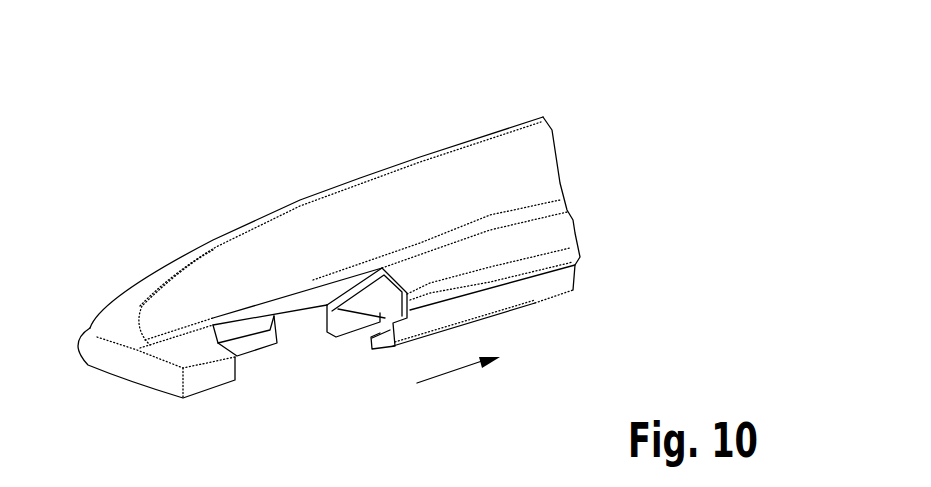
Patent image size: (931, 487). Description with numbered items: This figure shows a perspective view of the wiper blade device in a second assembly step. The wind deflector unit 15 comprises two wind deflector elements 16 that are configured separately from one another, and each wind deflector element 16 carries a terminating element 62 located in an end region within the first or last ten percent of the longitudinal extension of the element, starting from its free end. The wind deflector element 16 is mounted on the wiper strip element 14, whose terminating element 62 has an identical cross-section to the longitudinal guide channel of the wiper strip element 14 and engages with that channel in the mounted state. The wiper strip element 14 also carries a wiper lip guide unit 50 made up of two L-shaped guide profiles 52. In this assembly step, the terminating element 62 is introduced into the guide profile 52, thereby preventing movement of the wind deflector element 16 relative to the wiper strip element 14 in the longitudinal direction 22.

The wind deflector unit 15 is at (471, 92).
The wind deflector element 16 is at (421, 157).
The wiper strip element 14 is at (520, 270).
The guide profile 52 is at (335, 340).
The wiper lip guide unit 50 is at (402, 374).
The terminating element 62 is at (246, 352).
The longitudinal direction 22 is at (453, 378).